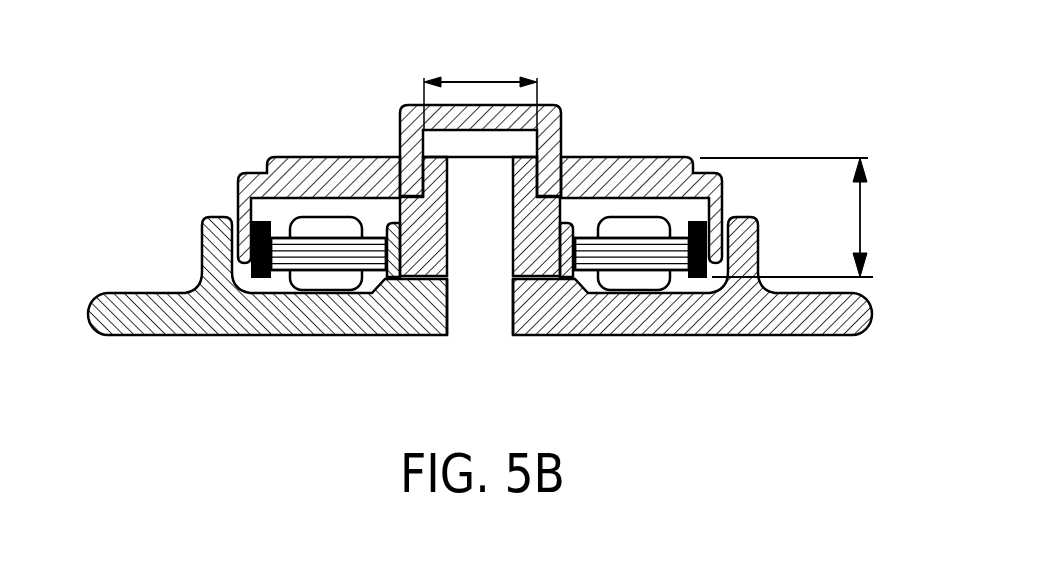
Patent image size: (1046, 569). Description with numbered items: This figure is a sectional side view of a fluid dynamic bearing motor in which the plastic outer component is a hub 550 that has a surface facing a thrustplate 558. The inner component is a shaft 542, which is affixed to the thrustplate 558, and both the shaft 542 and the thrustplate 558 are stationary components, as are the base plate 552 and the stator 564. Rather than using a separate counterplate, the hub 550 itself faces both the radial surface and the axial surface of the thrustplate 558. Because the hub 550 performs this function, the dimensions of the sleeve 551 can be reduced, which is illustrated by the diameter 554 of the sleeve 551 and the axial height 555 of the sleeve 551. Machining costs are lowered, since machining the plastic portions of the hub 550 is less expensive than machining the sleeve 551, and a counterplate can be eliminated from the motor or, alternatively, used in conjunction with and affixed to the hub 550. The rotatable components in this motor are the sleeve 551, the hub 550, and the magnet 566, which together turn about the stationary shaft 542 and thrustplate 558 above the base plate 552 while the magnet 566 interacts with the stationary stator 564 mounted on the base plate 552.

The shaft 542 is at (500, 246).
The hub 550 is at (562, 112).
The sleeve 551 is at (538, 222).
The base plate 552 is at (752, 318).
The diameter 554 is at (475, 82).
The axial height 555 is at (862, 222).
The thrustplate 558 is at (457, 150).
The stator 564 is at (627, 283).
The magnet 566 is at (698, 280).